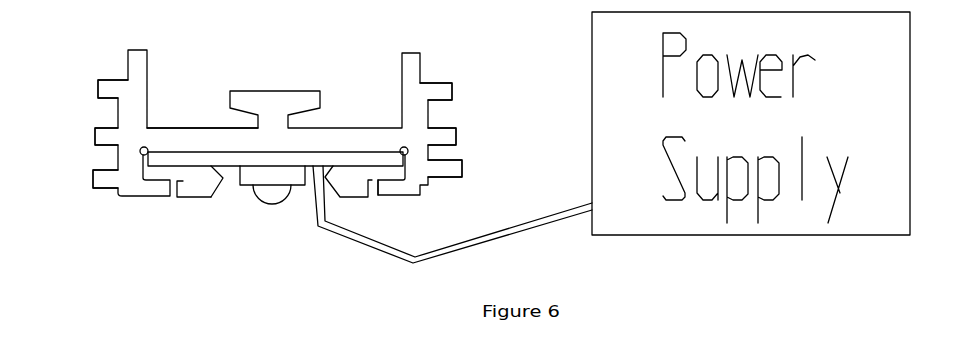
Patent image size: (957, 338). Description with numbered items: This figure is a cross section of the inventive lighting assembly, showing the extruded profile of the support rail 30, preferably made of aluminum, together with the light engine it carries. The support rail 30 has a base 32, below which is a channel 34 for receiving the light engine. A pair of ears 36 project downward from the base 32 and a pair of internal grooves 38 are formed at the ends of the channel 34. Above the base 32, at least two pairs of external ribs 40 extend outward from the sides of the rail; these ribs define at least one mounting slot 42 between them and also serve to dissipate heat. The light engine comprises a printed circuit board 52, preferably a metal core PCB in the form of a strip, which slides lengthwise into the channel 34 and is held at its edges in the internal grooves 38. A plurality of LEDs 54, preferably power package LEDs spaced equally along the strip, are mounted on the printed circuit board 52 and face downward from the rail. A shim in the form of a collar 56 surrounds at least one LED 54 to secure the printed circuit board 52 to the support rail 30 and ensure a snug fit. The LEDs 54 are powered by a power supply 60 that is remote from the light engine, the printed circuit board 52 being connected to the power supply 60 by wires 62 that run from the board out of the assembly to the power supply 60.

The support rail 30 is at (167, 118).
The base 32 is at (217, 127).
The channel 34 is at (230, 173).
The ears 36 is at (402, 190).
The internal grooves 38 is at (153, 160).
The external ribs 40 is at (110, 90).
The mounting slot 42 is at (432, 110).
The printed circuit board 52 is at (348, 160).
The LEDs 54 is at (277, 195).
The collar 56 is at (191, 183).
The power supply 60 is at (877, 212).
The wires 62 is at (482, 245).